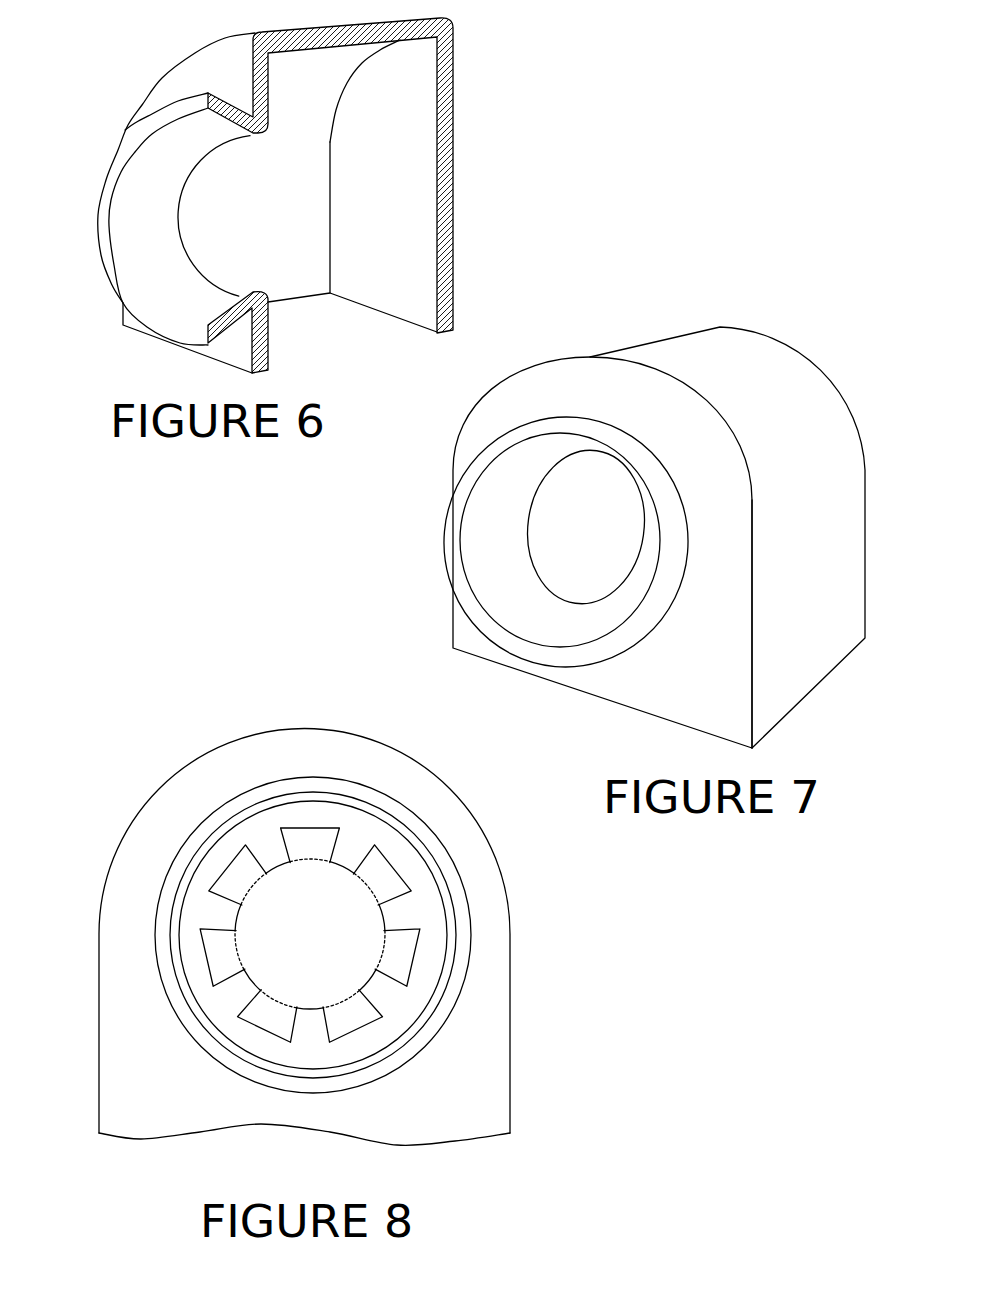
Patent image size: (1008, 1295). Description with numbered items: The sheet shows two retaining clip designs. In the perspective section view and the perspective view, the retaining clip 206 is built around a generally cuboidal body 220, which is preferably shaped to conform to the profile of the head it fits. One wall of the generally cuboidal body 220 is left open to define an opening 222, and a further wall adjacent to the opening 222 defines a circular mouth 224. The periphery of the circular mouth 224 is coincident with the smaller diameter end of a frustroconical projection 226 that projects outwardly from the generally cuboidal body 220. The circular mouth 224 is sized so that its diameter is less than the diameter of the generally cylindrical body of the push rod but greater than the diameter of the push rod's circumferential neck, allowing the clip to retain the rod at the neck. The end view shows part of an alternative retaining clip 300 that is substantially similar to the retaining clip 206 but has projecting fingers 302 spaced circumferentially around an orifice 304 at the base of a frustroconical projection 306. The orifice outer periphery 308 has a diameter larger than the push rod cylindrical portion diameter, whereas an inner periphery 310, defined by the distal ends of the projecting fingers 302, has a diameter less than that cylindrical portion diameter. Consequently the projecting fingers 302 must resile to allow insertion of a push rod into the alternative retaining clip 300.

In FIG. 6, the retaining clip 206 is at (480, 95).
In FIG. 7, the retaining clip 206 is at (765, 313).
In FIG. 6, the generally cuboidal body 220 is at (411, 187).
In FIG. 7, the generally cuboidal body 220 is at (824, 597).
In FIG. 6, the opening 222 is at (343, 341).
In FIG. 6, the circular mouth 224 is at (235, 213).
In FIG. 7, the circular mouth 224 is at (578, 540).
In FIG. 6, the frustroconical projection 226 is at (166, 234).
In FIG. 7, the frustroconical projection 226 is at (514, 561).
In FIG. 8, the alternative retaining clip 300 is at (232, 703).
In FIG. 8, the projecting fingers 302 is at (222, 918).
In FIG. 8, the orifice 304 is at (336, 951).
In FIG. 8, the frustroconical projection 306 is at (403, 1020).
In FIG. 8, the orifice outer periphery 308 is at (311, 827).
In FIG. 8, the inner periphery 310 is at (376, 880).